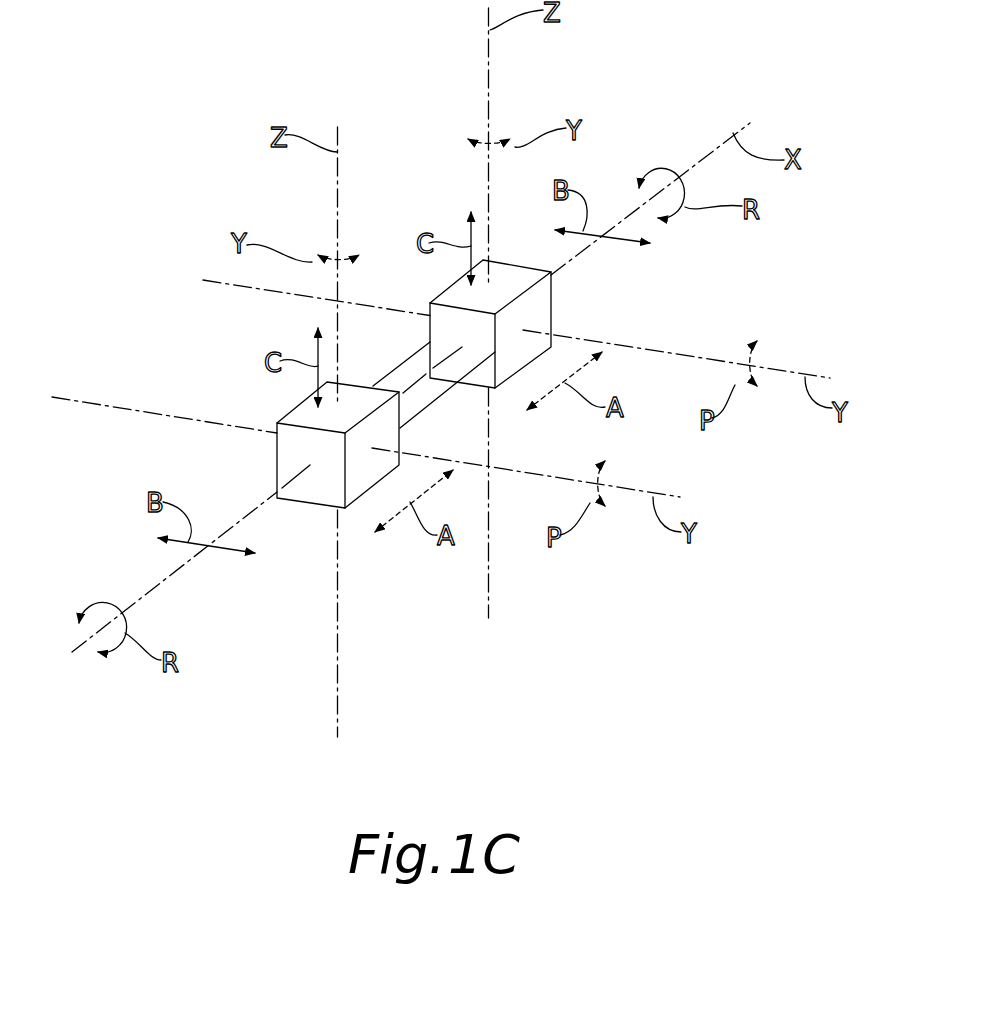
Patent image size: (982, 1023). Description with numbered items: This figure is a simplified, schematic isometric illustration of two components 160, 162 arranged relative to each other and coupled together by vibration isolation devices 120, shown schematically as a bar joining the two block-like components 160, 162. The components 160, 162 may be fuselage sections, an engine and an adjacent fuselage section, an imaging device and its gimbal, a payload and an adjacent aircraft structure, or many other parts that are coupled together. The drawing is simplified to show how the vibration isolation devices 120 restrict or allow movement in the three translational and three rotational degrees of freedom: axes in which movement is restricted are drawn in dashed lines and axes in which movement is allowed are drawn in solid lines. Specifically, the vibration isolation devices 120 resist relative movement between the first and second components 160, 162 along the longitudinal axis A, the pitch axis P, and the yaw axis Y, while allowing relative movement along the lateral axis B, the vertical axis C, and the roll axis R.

The vibration isolation device 120 is at (408, 357).
The first component 160 is at (402, 442).
The second component 162 is at (552, 310).